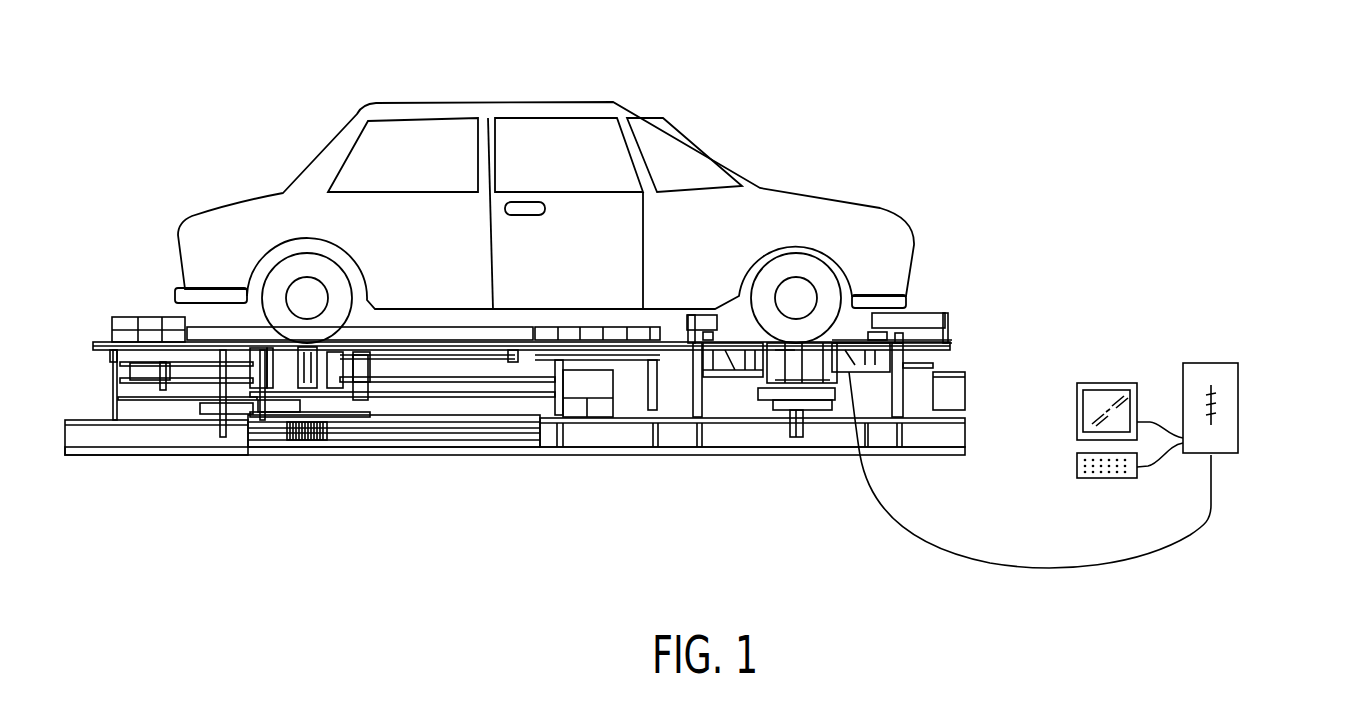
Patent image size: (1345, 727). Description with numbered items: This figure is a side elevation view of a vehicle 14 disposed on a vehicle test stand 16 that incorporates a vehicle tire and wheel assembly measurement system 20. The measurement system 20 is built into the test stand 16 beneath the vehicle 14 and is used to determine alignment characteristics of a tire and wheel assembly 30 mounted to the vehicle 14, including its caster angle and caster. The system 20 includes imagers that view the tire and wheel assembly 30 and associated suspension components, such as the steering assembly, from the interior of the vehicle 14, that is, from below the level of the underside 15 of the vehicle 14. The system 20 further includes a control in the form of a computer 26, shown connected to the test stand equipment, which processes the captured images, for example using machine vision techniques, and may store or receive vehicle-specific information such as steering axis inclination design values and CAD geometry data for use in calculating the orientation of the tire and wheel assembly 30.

The vehicle 14 is at (602, 102).
The underside 15 is at (512, 310).
The vehicle test stand 16 is at (145, 455).
The vehicle tire and wheel assembly measurement system 20 is at (742, 377).
The computer 26 is at (1238, 405).
The tire and wheel assembly 30 is at (815, 288).